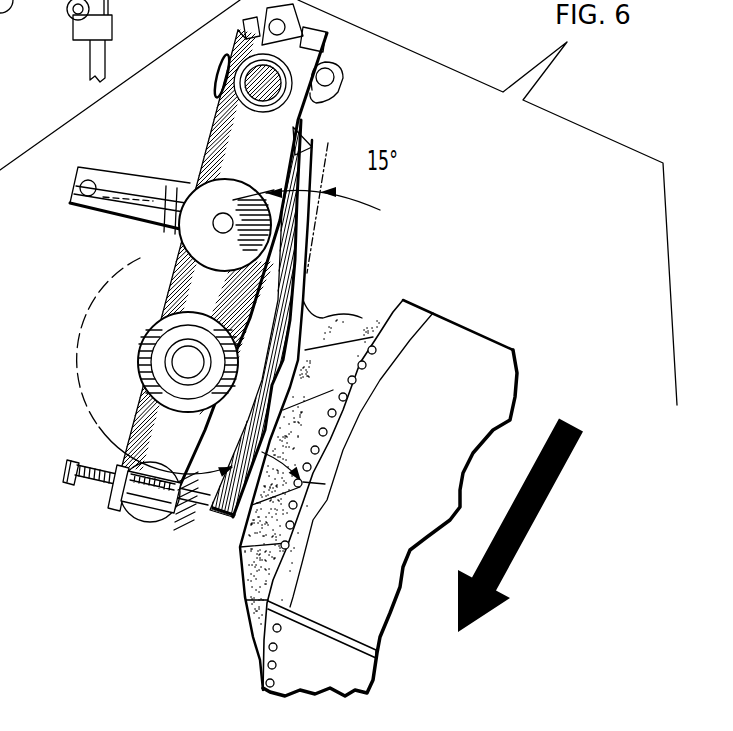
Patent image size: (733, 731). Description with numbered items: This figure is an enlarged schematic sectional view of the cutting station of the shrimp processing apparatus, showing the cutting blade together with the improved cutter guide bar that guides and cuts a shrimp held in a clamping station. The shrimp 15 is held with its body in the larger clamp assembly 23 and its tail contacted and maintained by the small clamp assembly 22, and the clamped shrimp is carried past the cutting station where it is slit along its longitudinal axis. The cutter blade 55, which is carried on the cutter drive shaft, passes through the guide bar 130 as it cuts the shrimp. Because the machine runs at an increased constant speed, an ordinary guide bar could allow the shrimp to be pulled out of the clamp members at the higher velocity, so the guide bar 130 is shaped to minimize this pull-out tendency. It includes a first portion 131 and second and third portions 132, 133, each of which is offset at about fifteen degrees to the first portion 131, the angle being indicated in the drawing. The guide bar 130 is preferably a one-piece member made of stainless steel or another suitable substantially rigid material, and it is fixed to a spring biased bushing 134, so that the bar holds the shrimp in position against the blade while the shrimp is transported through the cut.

The shrimp 15 is at (358, 320).
The small clamp assembly 22 is at (378, 661).
The larger clamp assembly 23 is at (466, 340).
The cutter blade 55 is at (79, 322).
The guide bar 130 is at (209, 522).
The first portion 131 is at (258, 293).
The second portion 132 is at (257, 430).
The third portion 133 is at (303, 246).
The spring biased bushing 134 is at (318, 100).